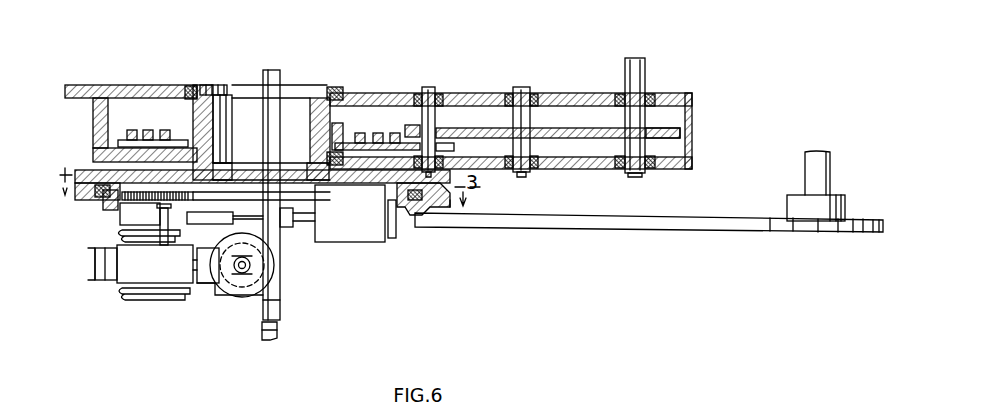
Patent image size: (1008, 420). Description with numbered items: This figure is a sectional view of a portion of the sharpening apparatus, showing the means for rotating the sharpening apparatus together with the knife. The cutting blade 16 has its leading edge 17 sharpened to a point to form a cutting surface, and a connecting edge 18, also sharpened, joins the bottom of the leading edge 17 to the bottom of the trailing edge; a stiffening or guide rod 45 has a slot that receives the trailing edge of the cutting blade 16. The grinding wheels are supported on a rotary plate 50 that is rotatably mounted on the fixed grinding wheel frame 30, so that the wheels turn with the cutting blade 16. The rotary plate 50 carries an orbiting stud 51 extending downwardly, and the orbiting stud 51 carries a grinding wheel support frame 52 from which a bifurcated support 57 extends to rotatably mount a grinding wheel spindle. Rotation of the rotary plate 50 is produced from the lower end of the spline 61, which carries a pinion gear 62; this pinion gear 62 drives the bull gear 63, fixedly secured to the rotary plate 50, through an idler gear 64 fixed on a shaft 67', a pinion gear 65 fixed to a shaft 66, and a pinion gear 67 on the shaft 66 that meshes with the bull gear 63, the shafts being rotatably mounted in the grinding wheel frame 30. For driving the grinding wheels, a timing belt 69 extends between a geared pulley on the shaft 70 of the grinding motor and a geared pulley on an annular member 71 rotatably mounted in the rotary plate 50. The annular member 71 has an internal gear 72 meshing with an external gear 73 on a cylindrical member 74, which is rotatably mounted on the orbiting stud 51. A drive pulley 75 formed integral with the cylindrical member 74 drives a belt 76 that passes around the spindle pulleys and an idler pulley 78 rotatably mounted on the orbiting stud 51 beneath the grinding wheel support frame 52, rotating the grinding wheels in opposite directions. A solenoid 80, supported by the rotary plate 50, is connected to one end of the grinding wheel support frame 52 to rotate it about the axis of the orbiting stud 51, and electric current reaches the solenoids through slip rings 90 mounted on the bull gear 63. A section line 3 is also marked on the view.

The section line 3 is at (110, 183).
The cutting blade 16 is at (262, 113).
The leading edge 17 is at (262, 78).
The connecting edge 18 is at (264, 342).
The grinding wheel support frame 30 is at (696, 116).
The stiffening or guide rod 45 is at (280, 308).
The rotary plate 50 is at (450, 197).
The orbiting stud 51 is at (160, 173).
The grinding wheel support frame 52 is at (157, 274).
The bifurcated support 57 is at (207, 275).
The spline 61 is at (646, 80).
The pinion gear 62 is at (660, 138).
The bull gear 63 is at (127, 148).
The idler gear 64 is at (563, 139).
The pinion gear 65 is at (407, 128).
The shaft 66 is at (429, 88).
The pinion gear 67 is at (466, 147).
The shaft 67' is at (531, 115).
The timing belt 69 is at (750, 233).
The shaft 70 is at (832, 168).
The annular member 71 is at (410, 217).
The internal gear 72 is at (393, 240).
The external gear 73 is at (127, 203).
The cylindrical member 74 is at (128, 224).
The drive pulley 75 is at (120, 250).
The belt 76 is at (223, 297).
The idler pulley 78 is at (133, 300).
The solenoid 80 is at (337, 226).
The slip rings 90 is at (172, 129).